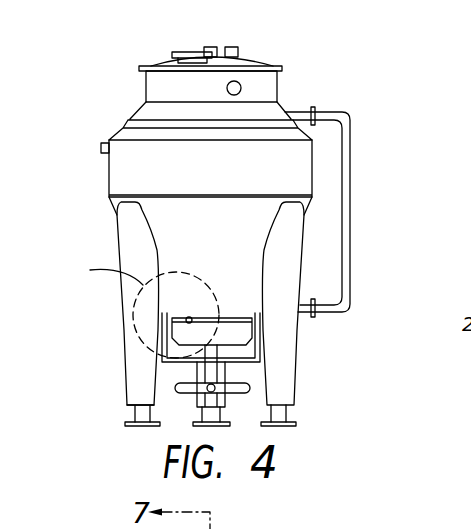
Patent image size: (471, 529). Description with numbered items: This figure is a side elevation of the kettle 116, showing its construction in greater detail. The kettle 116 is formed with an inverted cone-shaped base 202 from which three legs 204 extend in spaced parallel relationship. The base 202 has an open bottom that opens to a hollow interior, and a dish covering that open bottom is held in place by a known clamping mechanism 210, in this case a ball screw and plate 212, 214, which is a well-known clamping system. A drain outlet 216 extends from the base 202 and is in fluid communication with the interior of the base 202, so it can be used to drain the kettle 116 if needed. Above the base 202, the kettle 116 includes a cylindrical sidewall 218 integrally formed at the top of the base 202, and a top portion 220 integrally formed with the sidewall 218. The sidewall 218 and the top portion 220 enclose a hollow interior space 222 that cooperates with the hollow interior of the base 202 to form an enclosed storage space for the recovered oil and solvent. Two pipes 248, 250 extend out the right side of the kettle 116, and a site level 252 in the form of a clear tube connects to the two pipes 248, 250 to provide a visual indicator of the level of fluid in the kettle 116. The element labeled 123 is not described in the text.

The kettle 116 is at (101, 68).
The port 123 is at (226, 90).
The hollow interior space 222 is at (252, 60).
The top portion 220 is at (278, 103).
The pipe 248 is at (300, 106).
The site level 252 is at (355, 138).
The pipe 250 is at (306, 311).
The cylindrical sidewall 218 is at (291, 158).
The inverted cone-shaped base 202 is at (238, 234).
The legs 204 is at (128, 242).
The drain outlet 216 is at (178, 319).
The clamping mechanism 210 is at (180, 372).
The ball screw 212 is at (182, 388).
The plate 214 is at (245, 362).